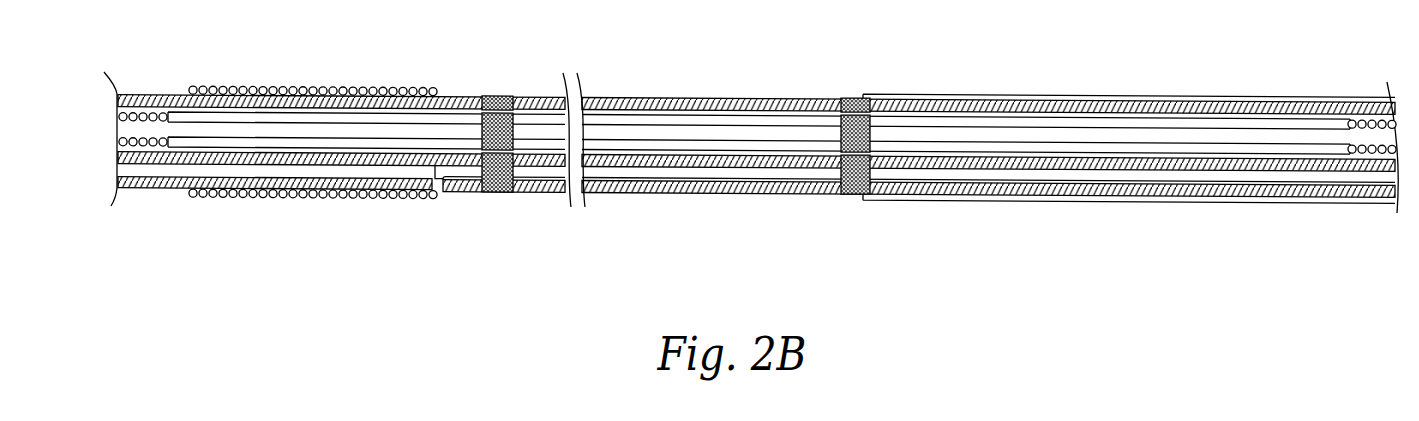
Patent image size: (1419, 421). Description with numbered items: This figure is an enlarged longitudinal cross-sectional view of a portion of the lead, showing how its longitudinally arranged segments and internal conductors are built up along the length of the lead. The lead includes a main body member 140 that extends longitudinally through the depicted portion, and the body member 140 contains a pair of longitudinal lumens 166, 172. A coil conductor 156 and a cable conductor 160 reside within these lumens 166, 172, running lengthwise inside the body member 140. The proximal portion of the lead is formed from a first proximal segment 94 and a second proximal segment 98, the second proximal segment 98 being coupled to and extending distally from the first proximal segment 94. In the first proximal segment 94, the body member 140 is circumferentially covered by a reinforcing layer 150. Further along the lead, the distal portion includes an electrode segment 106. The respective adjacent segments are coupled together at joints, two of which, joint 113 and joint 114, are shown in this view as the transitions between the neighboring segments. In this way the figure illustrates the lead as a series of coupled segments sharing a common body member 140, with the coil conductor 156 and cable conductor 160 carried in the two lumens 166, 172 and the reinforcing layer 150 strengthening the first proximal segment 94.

The first proximal segment 94 is at (1055, 197).
The second proximal segment 98 is at (650, 192).
The electrode segment 106 is at (458, 94).
The joint 113 is at (849, 94).
The joint 114 is at (500, 190).
The main body member 140 is at (730, 95).
The reinforcing layer 150 is at (1004, 95).
The coil conductor 156 is at (657, 128).
The cable conductor 160 is at (808, 173).
The longitudinal lumen 166 is at (133, 106).
The longitudinal lumen 172 is at (353, 168).